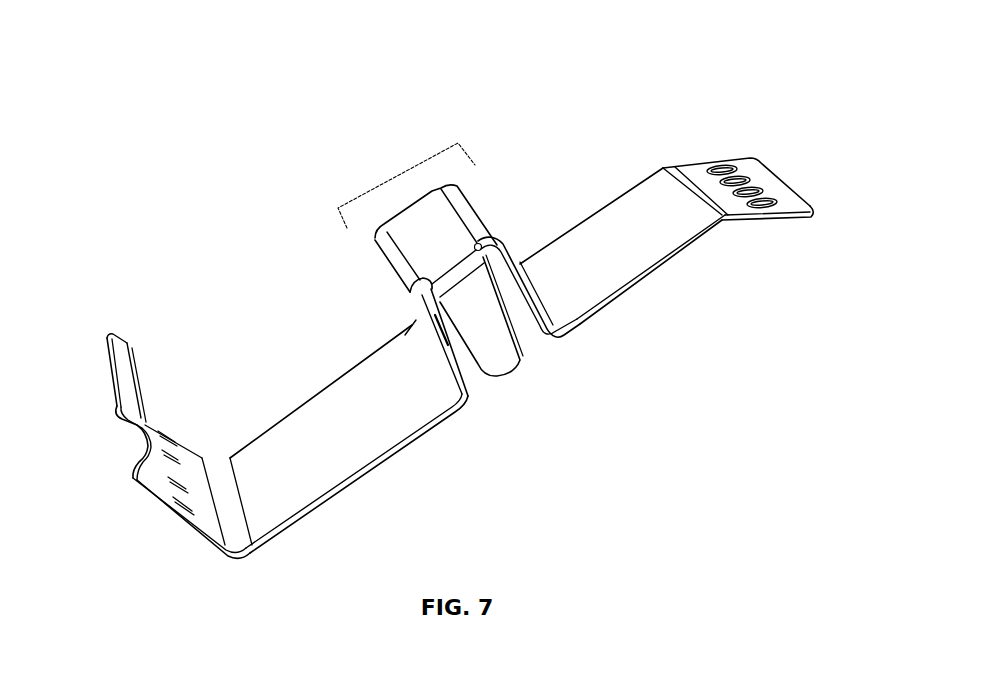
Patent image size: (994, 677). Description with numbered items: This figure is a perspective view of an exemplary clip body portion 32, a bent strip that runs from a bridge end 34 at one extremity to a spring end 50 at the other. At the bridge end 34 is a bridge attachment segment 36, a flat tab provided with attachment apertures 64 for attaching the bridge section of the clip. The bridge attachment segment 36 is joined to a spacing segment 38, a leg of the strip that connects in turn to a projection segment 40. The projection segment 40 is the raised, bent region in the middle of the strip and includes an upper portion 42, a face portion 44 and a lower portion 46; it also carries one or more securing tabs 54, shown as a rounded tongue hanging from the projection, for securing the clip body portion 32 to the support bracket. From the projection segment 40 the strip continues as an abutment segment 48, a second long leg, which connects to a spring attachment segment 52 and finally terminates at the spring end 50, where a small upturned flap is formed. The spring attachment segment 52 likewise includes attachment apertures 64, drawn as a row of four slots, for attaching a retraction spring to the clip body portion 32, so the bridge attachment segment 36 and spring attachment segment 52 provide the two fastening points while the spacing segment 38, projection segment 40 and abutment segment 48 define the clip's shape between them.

The clip body portion 32 is at (148, 221).
The bridge end 34 is at (770, 177).
The bridge attachment segment 36 is at (787, 195).
The spacing segment 38 is at (643, 252).
The projection segment 40 is at (407, 175).
The upper portion 42 is at (520, 262).
The face portion 44 is at (415, 247).
The lower portion 46 is at (417, 313).
The abutment segment 48 is at (335, 460).
The spring end 50 is at (113, 405).
The spring attachment segment 52 is at (205, 513).
The securing tab 54 is at (502, 356).
The attachment apertures 64 is at (179, 458).